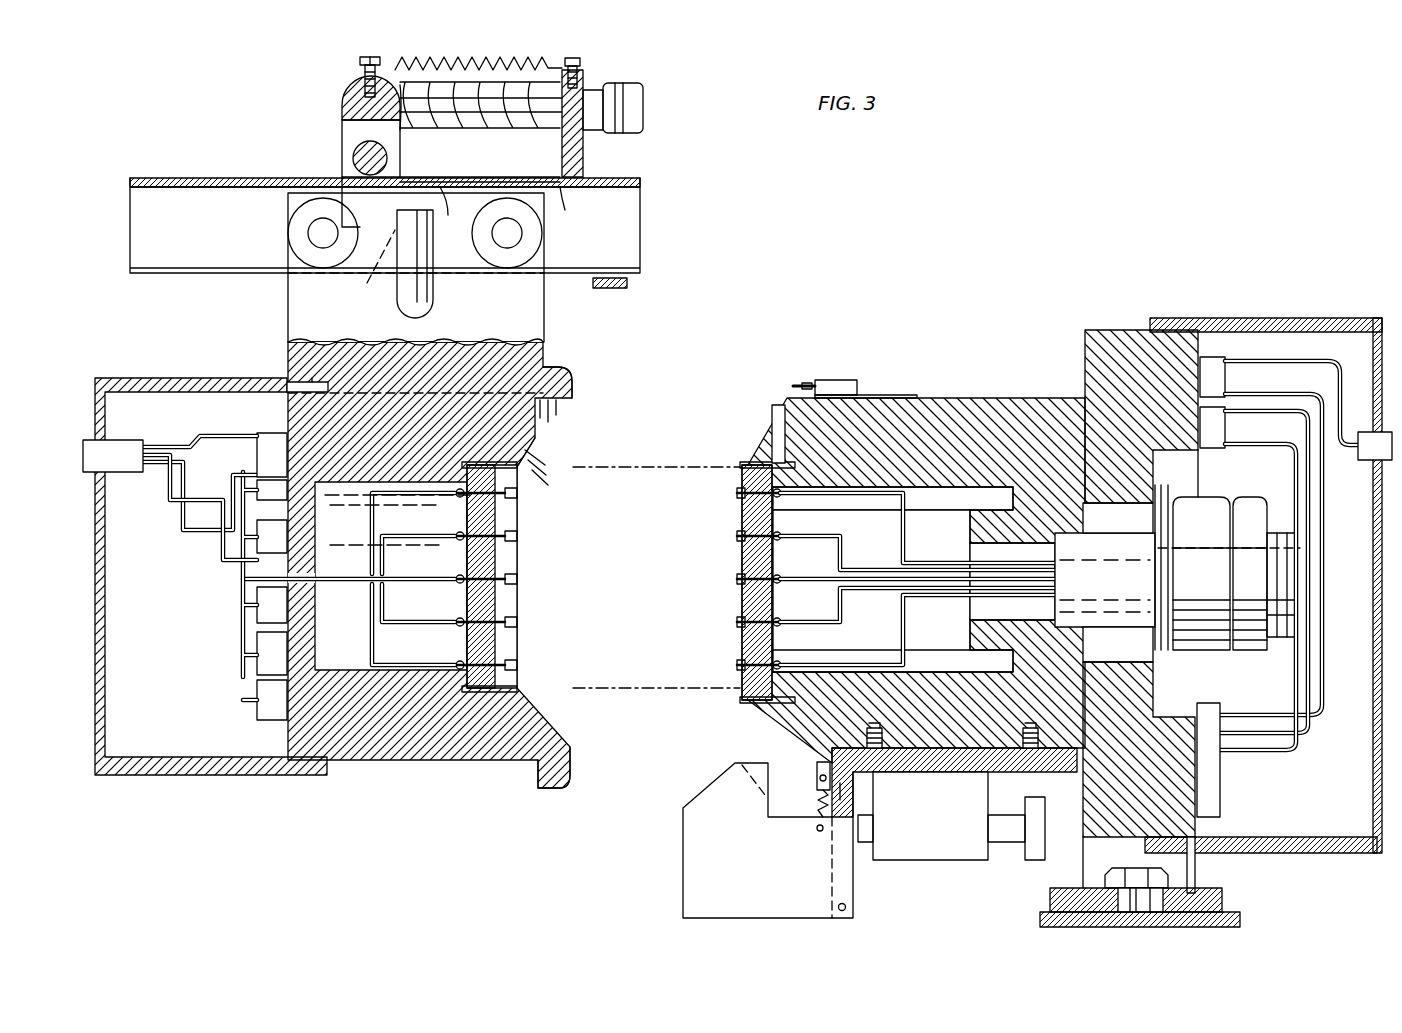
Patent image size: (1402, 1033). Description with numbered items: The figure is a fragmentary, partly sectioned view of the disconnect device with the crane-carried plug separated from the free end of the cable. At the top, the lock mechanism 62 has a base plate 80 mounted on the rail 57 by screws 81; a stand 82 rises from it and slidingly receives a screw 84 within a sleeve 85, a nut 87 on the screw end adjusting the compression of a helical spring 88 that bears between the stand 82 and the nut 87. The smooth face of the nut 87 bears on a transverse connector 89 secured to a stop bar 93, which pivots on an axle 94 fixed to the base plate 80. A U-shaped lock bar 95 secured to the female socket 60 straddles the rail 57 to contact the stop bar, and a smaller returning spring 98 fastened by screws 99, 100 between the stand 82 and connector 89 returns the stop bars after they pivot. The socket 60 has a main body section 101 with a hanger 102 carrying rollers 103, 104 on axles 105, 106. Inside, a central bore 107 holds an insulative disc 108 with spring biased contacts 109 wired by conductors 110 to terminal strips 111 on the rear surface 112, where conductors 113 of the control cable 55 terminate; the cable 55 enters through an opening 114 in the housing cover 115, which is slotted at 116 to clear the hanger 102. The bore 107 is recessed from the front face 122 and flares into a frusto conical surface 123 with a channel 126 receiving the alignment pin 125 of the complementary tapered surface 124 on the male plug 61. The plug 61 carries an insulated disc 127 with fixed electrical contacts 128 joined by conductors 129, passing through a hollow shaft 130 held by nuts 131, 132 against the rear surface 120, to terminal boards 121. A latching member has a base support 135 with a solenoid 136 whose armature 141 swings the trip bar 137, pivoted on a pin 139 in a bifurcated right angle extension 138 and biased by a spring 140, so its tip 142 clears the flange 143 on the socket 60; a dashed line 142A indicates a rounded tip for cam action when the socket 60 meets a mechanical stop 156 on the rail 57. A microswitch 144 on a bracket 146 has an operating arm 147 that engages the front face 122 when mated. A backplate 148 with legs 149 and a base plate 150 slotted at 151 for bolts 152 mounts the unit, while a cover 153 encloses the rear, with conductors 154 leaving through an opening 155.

The control cable 55 is at (120, 440).
The rail 57 is at (192, 178).
The female socket 60 is at (398, 442).
The male plug 61 is at (1012, 380).
The lock mechanism 62 is at (250, 139).
The base plate 80 is at (600, 181).
The screws 81 is at (522, 212).
The stand 82 is at (585, 150).
The screw 84 is at (645, 113).
The sleeve 85 is at (605, 92).
The nut 87 is at (400, 85).
The helical spring 88 is at (481, 126).
The transverse connector 89 is at (342, 100).
The stop bar 93 is at (371, 269).
The axle 94 is at (353, 158).
The lock bar 95 is at (436, 258).
The returning spring 98 is at (478, 60).
The screw 99 is at (358, 62).
The screw 100 is at (582, 62).
The main body section 101 is at (452, 787).
The hanger 102 is at (546, 325).
The roller 103 is at (536, 262).
The roller 104 is at (300, 228).
The axle 105 is at (522, 233).
The axle 106 is at (320, 234).
The central bore 107 is at (366, 521).
The insulative disc 108 is at (497, 518).
The spring biased contacts 109 is at (518, 548).
The conductors 110 is at (342, 575).
The terminal strips 111 is at (270, 458).
The rear surface 112 is at (290, 384).
The conductors 113 is at (272, 442).
The opening 114 is at (107, 478).
The housing cover 115 is at (160, 378).
The slot 116 is at (312, 378).
The rear surface 120 is at (1212, 330).
The terminal boards 121 is at (1215, 428).
The front face 122 is at (562, 372).
The frusto conical surface 123 is at (545, 455).
The tapered surface 124 is at (757, 478).
The alignment pin 125 is at (770, 430).
The channel 126 is at (574, 407).
The insulated disc 127 is at (740, 526).
The fixed electrical contacts 128 is at (740, 588).
The conductors 129 is at (860, 555).
The hollow shaft 130 is at (1140, 545).
The nut 131 is at (1250, 508).
The nut 132 is at (1200, 505).
The base support 135 is at (1058, 773).
The solenoid 136 is at (950, 821).
The trip bar 137 is at (784, 885).
The right angle extension 138 is at (845, 790).
The pin 139 is at (847, 907).
The spring 140 is at (815, 805).
The armature 141 is at (1040, 825).
The tip 142 is at (760, 763).
The dashed line 142A is at (760, 790).
The flange 143 is at (558, 790).
The microswitch 144 is at (842, 380).
The bracket 146 is at (890, 395).
The operating arm 147 is at (803, 384).
The backplate 148 is at (1122, 330).
The legs 149 is at (1197, 872).
The base plate 150 is at (1240, 915).
The slot 151 is at (1135, 868).
The bolt 152 is at (1052, 898).
The cover 153 is at (1372, 565).
The conductors 154 is at (1345, 462).
The opening 155 is at (1372, 430).
The mechanical stop 156 is at (628, 284).